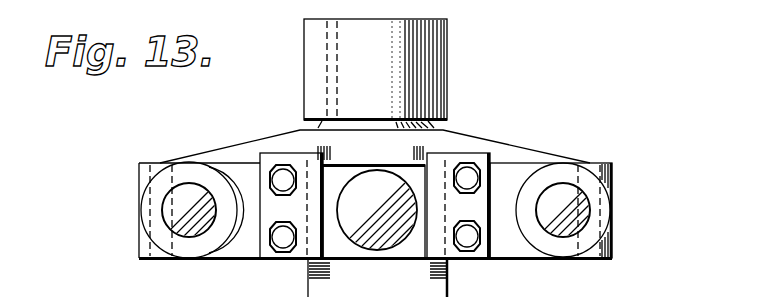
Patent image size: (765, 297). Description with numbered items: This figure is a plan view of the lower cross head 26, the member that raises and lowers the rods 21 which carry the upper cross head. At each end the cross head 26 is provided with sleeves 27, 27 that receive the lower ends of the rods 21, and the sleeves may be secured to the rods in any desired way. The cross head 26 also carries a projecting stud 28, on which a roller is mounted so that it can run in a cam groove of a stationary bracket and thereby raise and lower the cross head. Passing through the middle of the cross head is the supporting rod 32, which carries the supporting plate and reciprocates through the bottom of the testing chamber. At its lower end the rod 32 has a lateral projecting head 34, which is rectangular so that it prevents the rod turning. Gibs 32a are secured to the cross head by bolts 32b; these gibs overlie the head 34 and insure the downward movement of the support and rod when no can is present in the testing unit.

The shaft 21 is at (168, 220).
The lower cross head 26 is at (417, 144).
The sleeves 27 is at (186, 190).
The projecting stud 28 is at (455, 42).
The supporting rod 32 is at (375, 163).
The gibs 32a is at (477, 170).
The bolts 32b is at (281, 236).
The lateral projecting head 34 is at (432, 290).